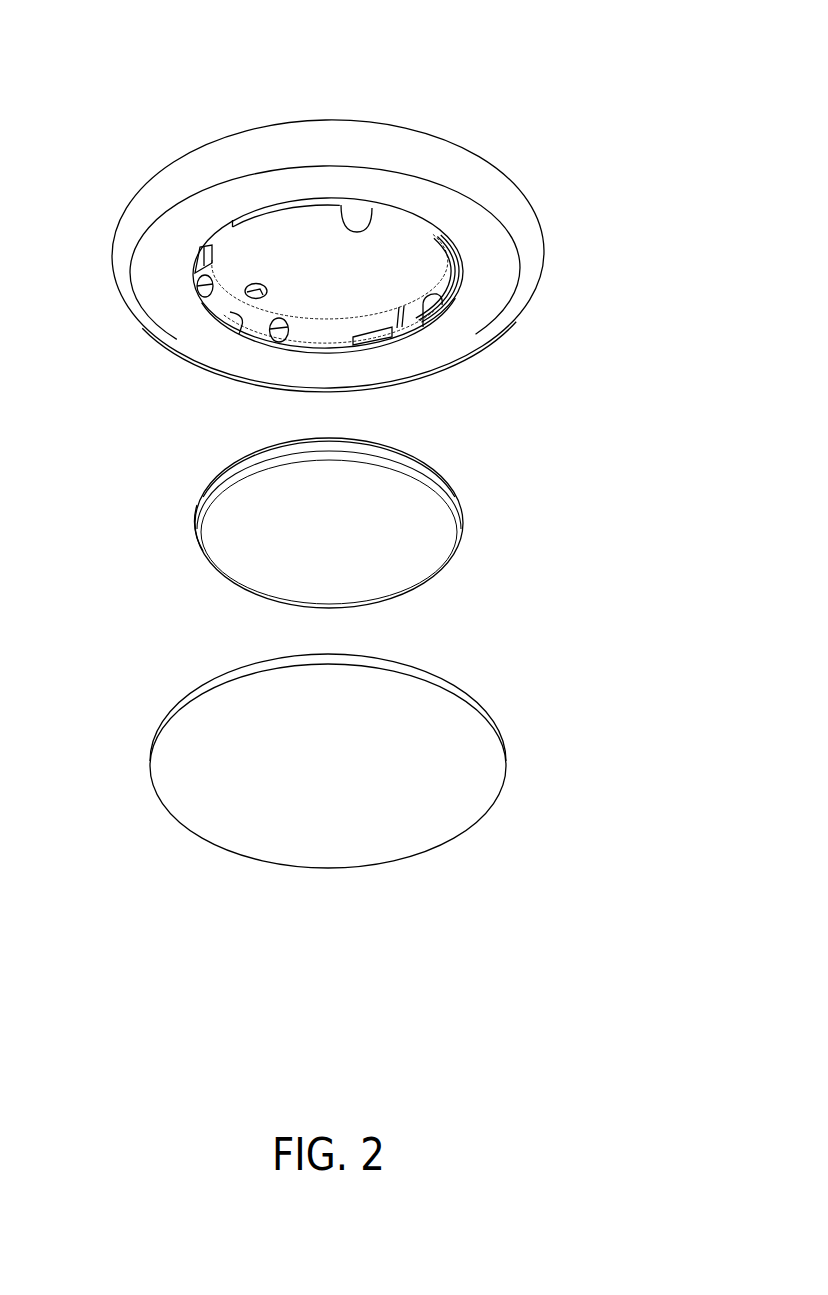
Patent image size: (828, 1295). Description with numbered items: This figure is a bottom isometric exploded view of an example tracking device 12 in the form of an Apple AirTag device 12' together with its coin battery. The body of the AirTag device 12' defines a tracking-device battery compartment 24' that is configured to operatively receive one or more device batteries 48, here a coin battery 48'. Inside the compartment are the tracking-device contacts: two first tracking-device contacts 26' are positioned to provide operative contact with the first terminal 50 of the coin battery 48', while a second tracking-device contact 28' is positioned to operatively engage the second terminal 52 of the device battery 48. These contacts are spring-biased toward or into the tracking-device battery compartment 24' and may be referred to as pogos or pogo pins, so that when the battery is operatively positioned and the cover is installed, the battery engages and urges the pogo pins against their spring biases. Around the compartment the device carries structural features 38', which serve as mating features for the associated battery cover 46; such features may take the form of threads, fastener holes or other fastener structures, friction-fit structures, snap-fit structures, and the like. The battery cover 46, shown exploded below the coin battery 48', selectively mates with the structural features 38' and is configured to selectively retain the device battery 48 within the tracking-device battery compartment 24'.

The tracking device 12 is at (386, 204).
The Apple AirTag device 12' is at (389, 207).
The tracking-device battery compartment 24' is at (322, 321).
The first tracking-device contacts 26' is at (291, 215).
The second tracking-device contact 28' is at (276, 183).
The structural features 38' is at (374, 238).
The battery cover 46 is at (505, 754).
The device battery 48 is at (383, 515).
The coin battery 48' is at (379, 490).
The first terminal 50 is at (199, 507).
The second terminal 52 is at (369, 441).